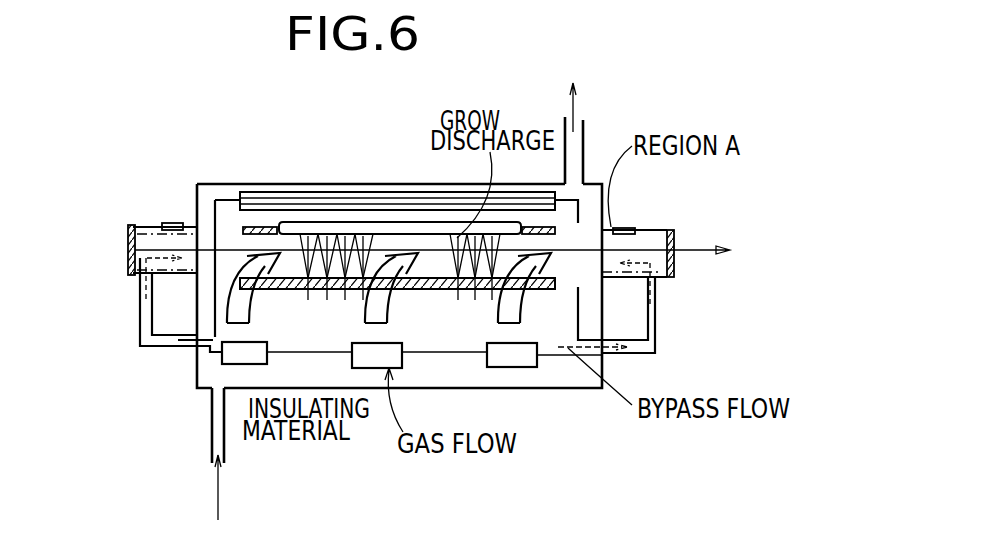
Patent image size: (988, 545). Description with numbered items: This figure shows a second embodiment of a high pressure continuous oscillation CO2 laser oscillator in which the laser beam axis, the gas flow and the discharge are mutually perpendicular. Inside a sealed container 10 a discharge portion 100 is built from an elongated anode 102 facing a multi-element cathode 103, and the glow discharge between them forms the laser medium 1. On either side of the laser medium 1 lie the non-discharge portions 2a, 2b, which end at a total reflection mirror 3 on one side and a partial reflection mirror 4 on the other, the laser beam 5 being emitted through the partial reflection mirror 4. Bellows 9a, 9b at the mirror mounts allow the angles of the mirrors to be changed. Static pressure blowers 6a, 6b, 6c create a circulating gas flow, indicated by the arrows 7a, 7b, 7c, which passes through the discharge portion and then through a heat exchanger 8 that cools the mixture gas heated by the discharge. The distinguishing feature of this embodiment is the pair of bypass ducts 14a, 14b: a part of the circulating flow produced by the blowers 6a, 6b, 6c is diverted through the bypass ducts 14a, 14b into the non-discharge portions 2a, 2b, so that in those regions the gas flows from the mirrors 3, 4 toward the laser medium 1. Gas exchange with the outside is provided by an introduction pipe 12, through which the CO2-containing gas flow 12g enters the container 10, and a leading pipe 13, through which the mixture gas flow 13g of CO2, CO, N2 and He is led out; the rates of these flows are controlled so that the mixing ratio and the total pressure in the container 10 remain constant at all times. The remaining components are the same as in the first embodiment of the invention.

The laser medium 1 is at (565, 266).
The non-discharge portion 2a is at (167, 284).
The non-discharge portion 2b is at (619, 300).
The total reflection mirror 3 is at (131, 225).
The partial reflection mirror 4 is at (670, 230).
The laser beam 5 is at (703, 252).
The blower 6a is at (268, 360).
The blower 6b is at (363, 342).
The blower 6c is at (530, 368).
The gas flow 7a is at (248, 298).
The gas flow 7b is at (383, 307).
The gas flow 7c is at (518, 312).
The heat exchanger 8 is at (298, 191).
The bellows 9a is at (172, 223).
The bellows 9b is at (622, 228).
The container 10 is at (588, 356).
The introduction pipe 12 is at (225, 440).
The gas flow 12g is at (219, 495).
The leading pipe 13 is at (585, 138).
The gas flow 13g is at (577, 103).
The bypass duct 14a is at (169, 347).
The bypass duct 14b is at (642, 355).
The discharge portion 100 is at (258, 226).
The elongated anode 102 is at (405, 222).
The multi-element cathode 103 is at (472, 303).